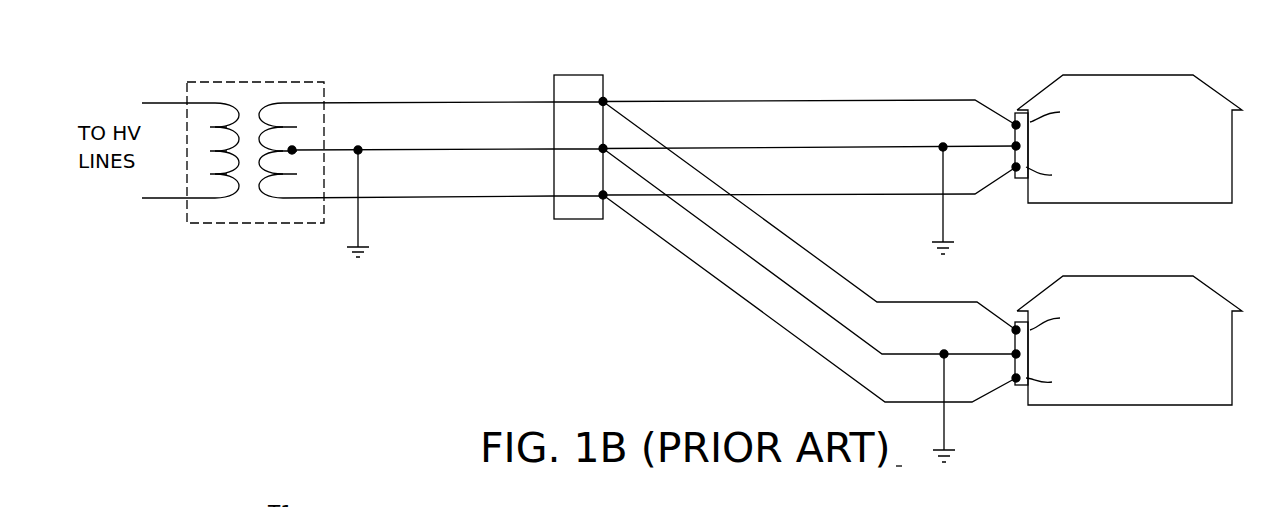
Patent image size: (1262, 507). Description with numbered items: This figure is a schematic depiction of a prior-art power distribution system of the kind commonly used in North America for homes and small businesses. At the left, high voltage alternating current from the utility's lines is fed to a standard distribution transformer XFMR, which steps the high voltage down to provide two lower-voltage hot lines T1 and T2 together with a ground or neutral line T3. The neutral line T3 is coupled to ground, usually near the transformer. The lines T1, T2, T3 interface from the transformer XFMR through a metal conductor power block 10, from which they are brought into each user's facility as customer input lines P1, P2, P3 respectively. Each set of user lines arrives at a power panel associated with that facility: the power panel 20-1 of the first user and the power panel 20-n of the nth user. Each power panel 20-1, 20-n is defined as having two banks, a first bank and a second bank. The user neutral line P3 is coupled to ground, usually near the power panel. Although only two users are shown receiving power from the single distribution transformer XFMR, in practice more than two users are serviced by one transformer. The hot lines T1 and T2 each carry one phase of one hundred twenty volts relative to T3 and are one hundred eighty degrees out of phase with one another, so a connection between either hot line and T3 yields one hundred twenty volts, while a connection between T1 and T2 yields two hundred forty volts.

The distribution transformer XFMR is at (272, 77).
The hot line T1 is at (438, 100).
The hot line T2 is at (422, 197).
The neutral line T3 is at (437, 147).
The power block 10 is at (572, 220).
The user input line P1 is at (765, 99).
The user input line P2 is at (765, 193).
The user input line P3 is at (765, 146).
The power panel 20-1 is at (1018, 180).
The power panel 20-n is at (1018, 387).